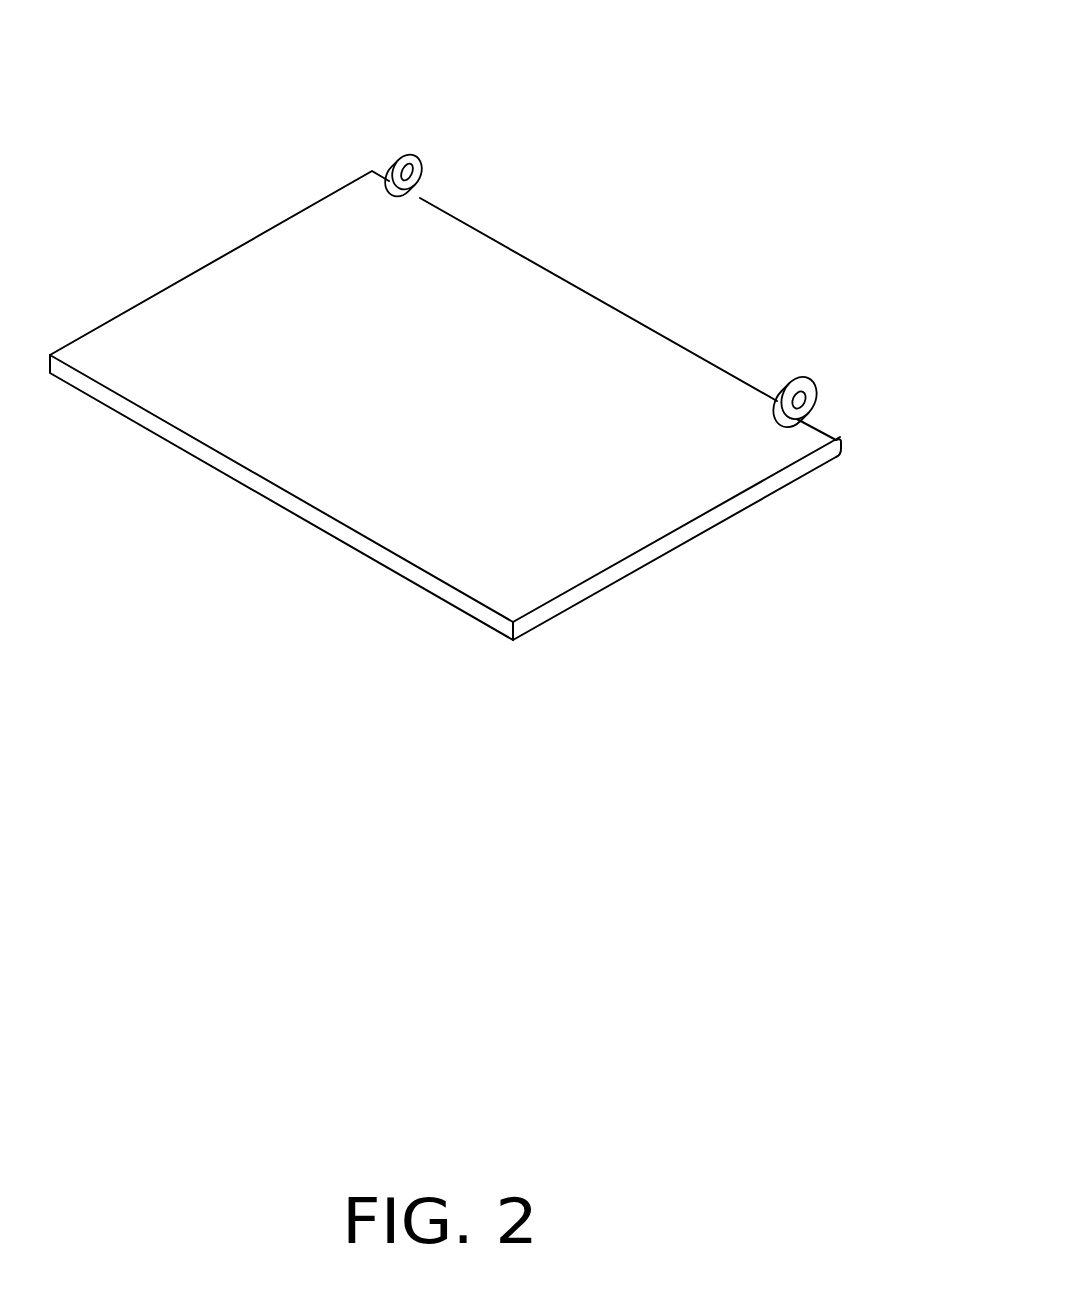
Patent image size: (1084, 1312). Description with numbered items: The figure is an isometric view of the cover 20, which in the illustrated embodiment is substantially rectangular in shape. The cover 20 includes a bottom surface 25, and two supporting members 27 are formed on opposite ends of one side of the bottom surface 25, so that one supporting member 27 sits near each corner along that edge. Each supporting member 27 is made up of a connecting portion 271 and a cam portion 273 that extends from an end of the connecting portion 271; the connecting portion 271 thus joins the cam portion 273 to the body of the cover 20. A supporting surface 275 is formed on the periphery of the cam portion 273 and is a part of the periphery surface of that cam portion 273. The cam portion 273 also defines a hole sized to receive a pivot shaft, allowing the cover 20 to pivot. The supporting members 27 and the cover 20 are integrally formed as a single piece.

The cover 20 is at (445, 345).
The bottom surface 25 is at (577, 322).
The supporting member 27 is at (863, 422).
The connecting portion 271 is at (787, 428).
The cam portion 273 is at (818, 398).
The supporting surface 275 is at (863, 444).